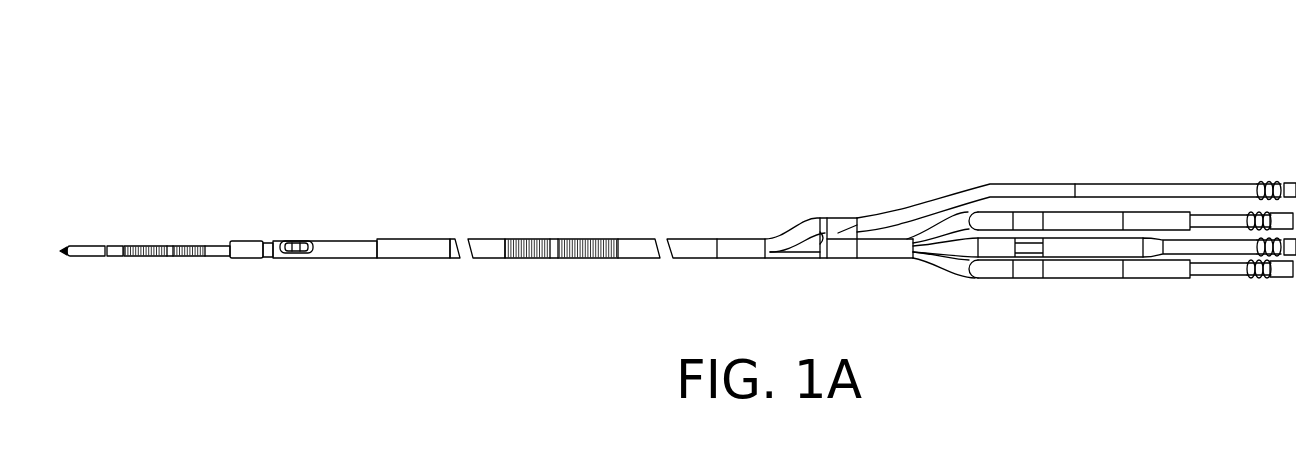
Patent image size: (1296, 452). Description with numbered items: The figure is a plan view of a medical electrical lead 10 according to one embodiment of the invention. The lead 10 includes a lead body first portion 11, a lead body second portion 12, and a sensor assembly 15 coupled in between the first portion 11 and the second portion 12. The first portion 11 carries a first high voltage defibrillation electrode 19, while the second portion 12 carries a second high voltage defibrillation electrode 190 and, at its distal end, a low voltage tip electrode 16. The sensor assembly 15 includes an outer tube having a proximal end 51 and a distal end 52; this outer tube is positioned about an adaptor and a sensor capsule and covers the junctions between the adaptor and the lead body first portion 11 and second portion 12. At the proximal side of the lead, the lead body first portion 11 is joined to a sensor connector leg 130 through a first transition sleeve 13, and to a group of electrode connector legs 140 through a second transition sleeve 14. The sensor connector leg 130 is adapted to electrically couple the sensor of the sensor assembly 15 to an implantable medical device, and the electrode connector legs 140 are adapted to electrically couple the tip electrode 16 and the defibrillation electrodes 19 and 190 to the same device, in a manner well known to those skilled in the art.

The lead 10 is at (706, 116).
The lead body first portion 11 is at (752, 268).
The lead body second portion 12 is at (255, 223).
The first transition sleeve 13 is at (785, 232).
The second transition sleeve 14 is at (956, 258).
The sensor assembly 15 is at (377, 268).
The low voltage tip electrode 16 is at (59, 251).
The first high voltage defibrillation electrode 19 is at (532, 238).
The proximal end 51 is at (378, 238).
The distal end 52 is at (218, 258).
The sensor connector leg 130 is at (1140, 160).
The electrode connector legs 140 is at (1143, 290).
The second high voltage defibrillation electrode 190 is at (141, 258).